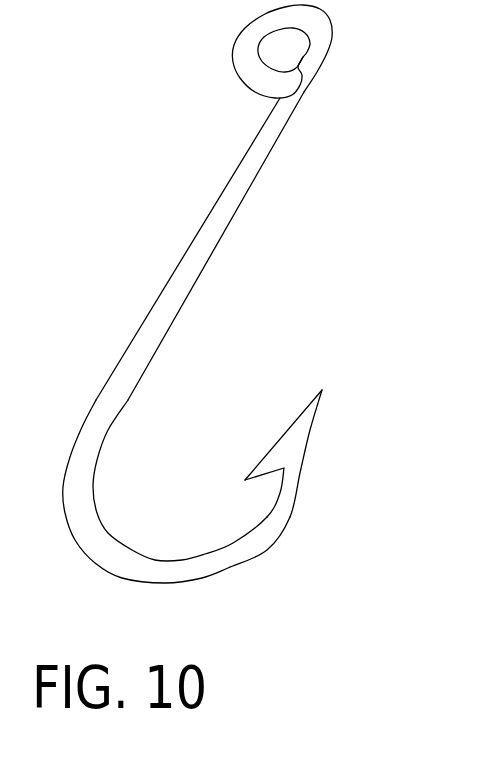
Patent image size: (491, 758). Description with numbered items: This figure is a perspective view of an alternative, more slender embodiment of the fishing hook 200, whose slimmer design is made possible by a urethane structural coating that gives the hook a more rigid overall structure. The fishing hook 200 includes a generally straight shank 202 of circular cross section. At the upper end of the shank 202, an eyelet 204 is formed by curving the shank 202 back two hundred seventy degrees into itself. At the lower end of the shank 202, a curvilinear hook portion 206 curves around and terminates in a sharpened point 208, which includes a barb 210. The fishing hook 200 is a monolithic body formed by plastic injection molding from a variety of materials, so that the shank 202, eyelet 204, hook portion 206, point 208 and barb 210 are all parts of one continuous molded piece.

The fishing hook 200 is at (276, 294).
The shank 202 is at (212, 227).
The eyelet 204 is at (302, 50).
The curvilinear hook portion 206 is at (113, 532).
The sharpened point 208 is at (334, 434).
The barb 210 is at (245, 480).